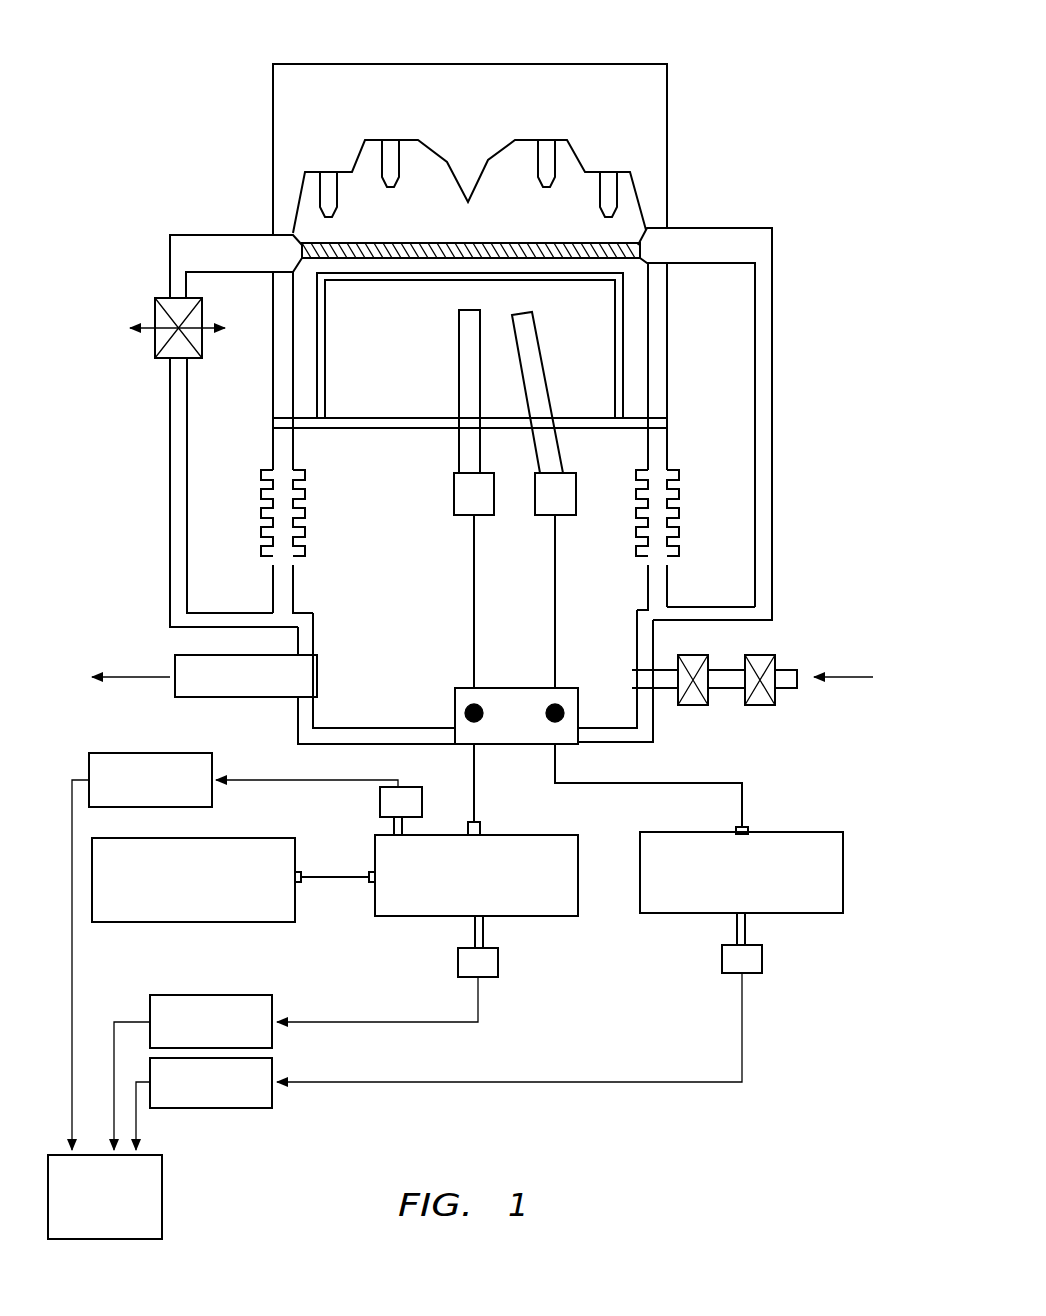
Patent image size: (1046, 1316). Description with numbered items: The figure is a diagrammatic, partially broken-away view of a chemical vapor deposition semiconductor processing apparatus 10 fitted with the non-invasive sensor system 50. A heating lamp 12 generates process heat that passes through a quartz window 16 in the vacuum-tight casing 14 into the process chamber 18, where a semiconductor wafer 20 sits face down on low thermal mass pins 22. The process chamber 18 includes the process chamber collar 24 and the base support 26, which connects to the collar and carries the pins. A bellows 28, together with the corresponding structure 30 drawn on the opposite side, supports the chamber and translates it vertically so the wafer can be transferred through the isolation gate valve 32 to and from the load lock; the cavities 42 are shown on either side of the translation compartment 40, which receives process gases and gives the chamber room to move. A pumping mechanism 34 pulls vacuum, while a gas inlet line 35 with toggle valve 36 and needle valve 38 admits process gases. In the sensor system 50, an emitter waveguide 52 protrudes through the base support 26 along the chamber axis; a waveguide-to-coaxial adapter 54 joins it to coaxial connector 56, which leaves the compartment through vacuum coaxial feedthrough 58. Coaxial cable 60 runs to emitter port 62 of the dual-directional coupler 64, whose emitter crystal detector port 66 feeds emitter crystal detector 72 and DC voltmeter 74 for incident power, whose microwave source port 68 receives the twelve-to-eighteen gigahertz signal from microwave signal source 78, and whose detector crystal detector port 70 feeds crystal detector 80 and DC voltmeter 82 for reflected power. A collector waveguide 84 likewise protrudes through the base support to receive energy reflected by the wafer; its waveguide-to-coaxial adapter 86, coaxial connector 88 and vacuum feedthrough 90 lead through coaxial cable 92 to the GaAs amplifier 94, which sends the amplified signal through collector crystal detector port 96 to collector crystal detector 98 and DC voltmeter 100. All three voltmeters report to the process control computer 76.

The semiconductor processing apparatus 10 is at (722, 55).
The heating lamp 12 is at (667, 128).
The vacuum-tight casing 14 is at (170, 255).
The quartz window 16 is at (356, 243).
The process chamber 18 is at (637, 310).
The semiconductor wafer 20 is at (575, 273).
The low thermal mass pins 22 is at (325, 376).
The process chamber collar 24 is at (667, 415).
The base support 26 is at (578, 428).
The bellows 28 is at (261, 523).
The right bellows 30 is at (682, 518).
The isolation gate valve 32 is at (155, 310).
The pumping mechanism 34 is at (257, 687).
The gas inlet line 35 is at (658, 674).
The toggle valve 36 is at (693, 705).
The needle valve 38 is at (760, 705).
The translation compartment 40 is at (358, 709).
The side cavity 42 is at (216, 599).
The non-invasive sensor system 50 is at (393, 553).
The emitter waveguide 52 is at (459, 355).
The waveguide-to-coaxial adapter 54 is at (454, 495).
The coaxial connector 56 is at (474, 592).
The vacuum coaxial feedthrough 58 is at (465, 712).
The coaxial cable 60 is at (478, 758).
The emitter port 62 is at (482, 830).
The dual-directional coupler 64 is at (578, 873).
The emitter crystal detector port 66 is at (393, 827).
The microwave source port 68 is at (370, 883).
The detector crystal detector port 70 is at (485, 933).
The emitter crystal detector 72 is at (422, 800).
The DC voltmeter 74 is at (128, 753).
The process control computer 76 is at (162, 1192).
The microwave signal source 78 is at (300, 858).
The crystal detector 80 is at (458, 962).
The DC voltmeter 82 is at (150, 1012).
The collector waveguide 84 is at (546, 354).
The waveguide-to-coaxial adapter 86 is at (576, 494).
The coaxial connector 88 is at (555, 592).
The vacuum feedthrough 90 is at (565, 712).
The coaxial cable 92 is at (614, 786).
The GaAs amplifier 94 is at (802, 830).
The collector crystal detector port 96 is at (737, 928).
The collector crystal detector 98 is at (762, 960).
The DC voltmeter 100 is at (272, 1098).